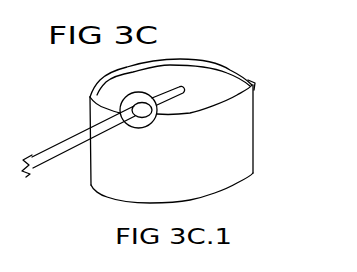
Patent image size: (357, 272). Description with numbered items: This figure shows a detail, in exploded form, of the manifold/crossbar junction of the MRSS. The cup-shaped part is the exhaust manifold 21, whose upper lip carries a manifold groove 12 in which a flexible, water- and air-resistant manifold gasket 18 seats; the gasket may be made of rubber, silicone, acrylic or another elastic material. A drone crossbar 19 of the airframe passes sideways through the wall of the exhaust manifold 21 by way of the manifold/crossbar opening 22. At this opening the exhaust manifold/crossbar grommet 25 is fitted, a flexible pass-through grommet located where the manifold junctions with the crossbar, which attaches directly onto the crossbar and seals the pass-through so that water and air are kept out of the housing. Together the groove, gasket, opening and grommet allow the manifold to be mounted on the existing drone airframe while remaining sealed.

The manifold groove 12 is at (252, 82).
The manifold gasket 18 is at (185, 57).
The drone crossbar 19 is at (93, 144).
The exhaust manifold 21 is at (237, 141).
The manifold/crossbar opening 22 is at (131, 128).
The exhaust manifold/crossbar grommet 25 is at (156, 120).